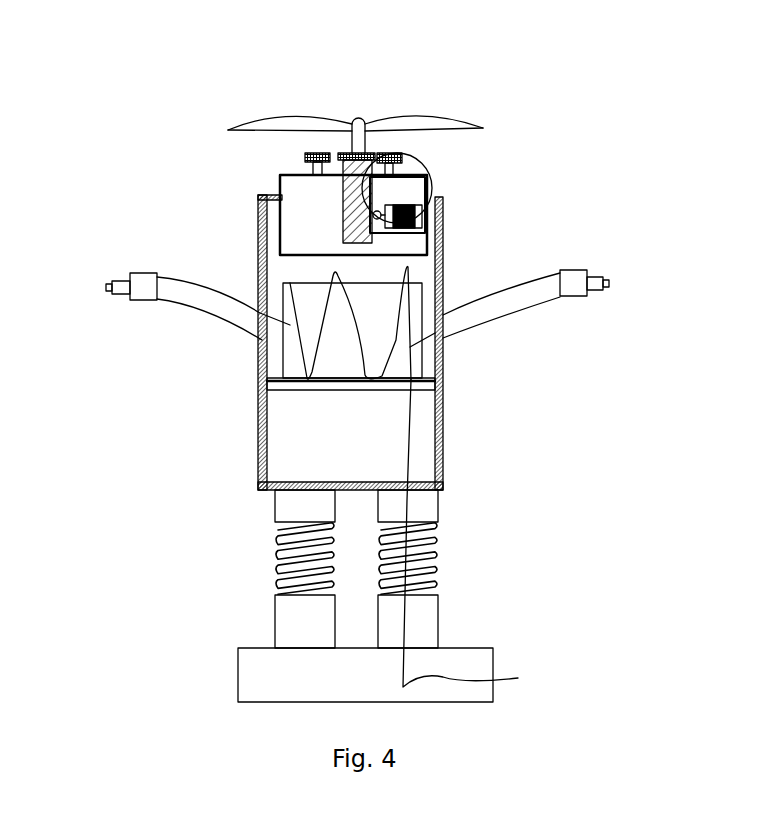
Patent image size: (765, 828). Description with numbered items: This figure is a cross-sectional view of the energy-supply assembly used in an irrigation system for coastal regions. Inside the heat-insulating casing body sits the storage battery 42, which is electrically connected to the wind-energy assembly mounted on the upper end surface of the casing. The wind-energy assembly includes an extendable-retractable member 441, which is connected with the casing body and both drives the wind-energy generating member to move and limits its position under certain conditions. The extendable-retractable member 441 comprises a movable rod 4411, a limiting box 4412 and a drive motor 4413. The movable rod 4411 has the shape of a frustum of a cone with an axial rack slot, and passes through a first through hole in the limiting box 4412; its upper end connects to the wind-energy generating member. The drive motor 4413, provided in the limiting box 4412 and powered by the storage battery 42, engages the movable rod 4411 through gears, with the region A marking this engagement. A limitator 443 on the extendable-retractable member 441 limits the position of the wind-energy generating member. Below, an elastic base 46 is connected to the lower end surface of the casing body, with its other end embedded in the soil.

The extendable-retractable member 441 is at (508, 68).
The movable rod 4411 is at (290, 282).
The limiting box 4412 is at (278, 176).
The drive motor 4413 is at (427, 217).
The detail region A is at (430, 173).
The limitator 443 is at (305, 156).
The storage battery 42 is at (420, 313).
The elastic base 46 is at (437, 667).